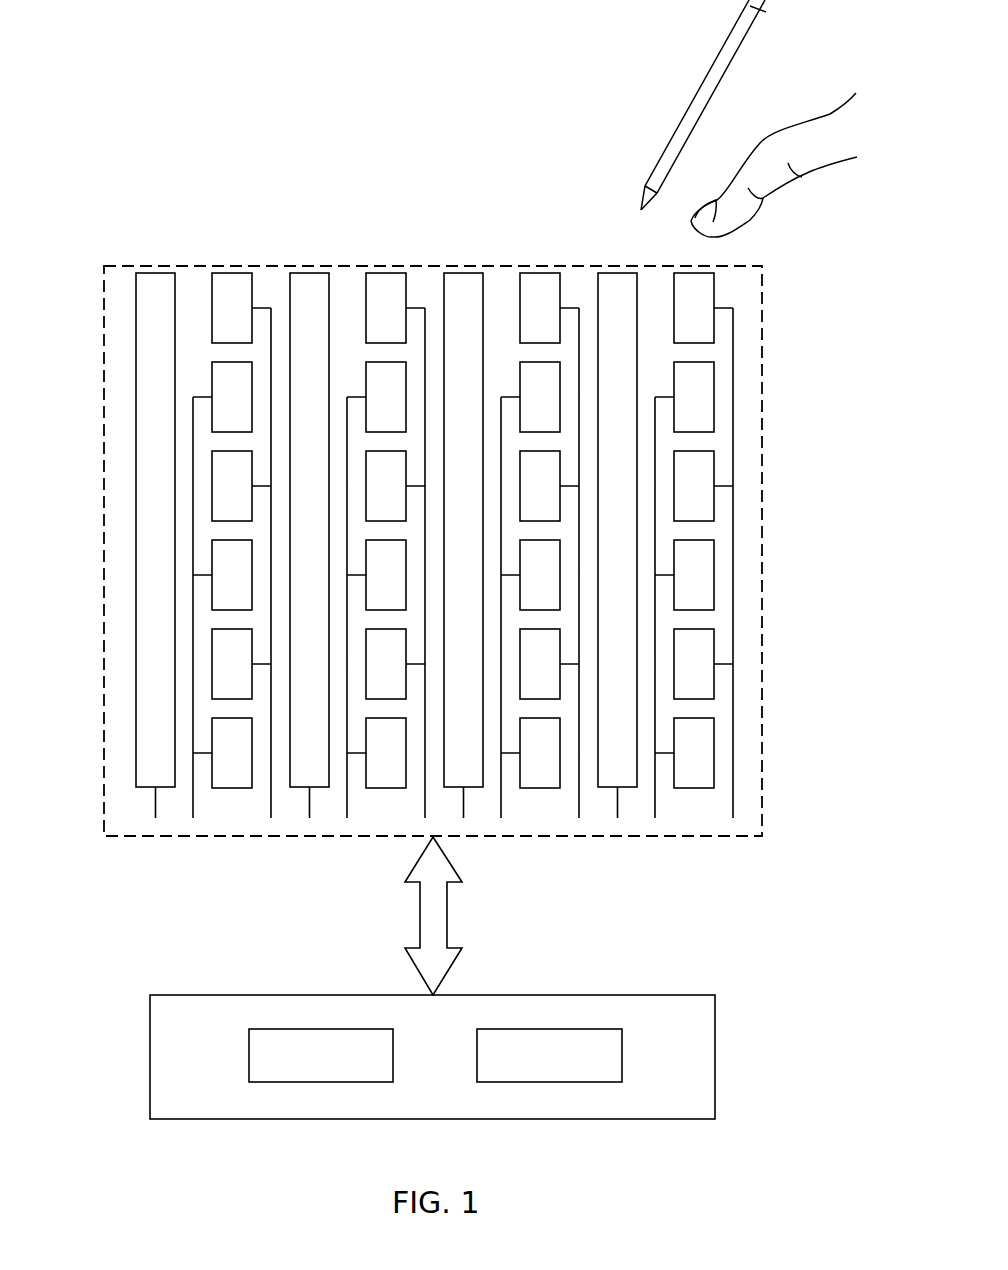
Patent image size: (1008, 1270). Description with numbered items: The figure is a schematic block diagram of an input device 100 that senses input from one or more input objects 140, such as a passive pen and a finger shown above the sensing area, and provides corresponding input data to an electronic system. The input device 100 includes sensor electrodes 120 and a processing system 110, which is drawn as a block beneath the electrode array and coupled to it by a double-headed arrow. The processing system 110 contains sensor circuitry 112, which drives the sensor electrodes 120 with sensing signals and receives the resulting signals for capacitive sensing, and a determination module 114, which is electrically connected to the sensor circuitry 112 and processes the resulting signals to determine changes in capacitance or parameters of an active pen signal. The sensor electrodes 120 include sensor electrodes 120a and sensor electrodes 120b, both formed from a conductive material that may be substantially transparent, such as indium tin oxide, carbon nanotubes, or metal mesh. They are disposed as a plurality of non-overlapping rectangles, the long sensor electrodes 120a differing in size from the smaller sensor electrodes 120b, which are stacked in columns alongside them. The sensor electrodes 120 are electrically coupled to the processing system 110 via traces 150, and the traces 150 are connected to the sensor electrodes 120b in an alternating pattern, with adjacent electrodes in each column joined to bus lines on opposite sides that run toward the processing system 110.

The input device 100 is at (188, 114).
The processing system 110 is at (178, 995).
The sensor circuitry 112 is at (342, 1066).
The determination module 114 is at (570, 1066).
The sensor electrodes 120 is at (120, 280).
The sensor electrodes 120a is at (160, 280).
The sensor electrodes 120b is at (258, 282).
The input objects 140 is at (830, 125).
The traces 150 is at (192, 814).